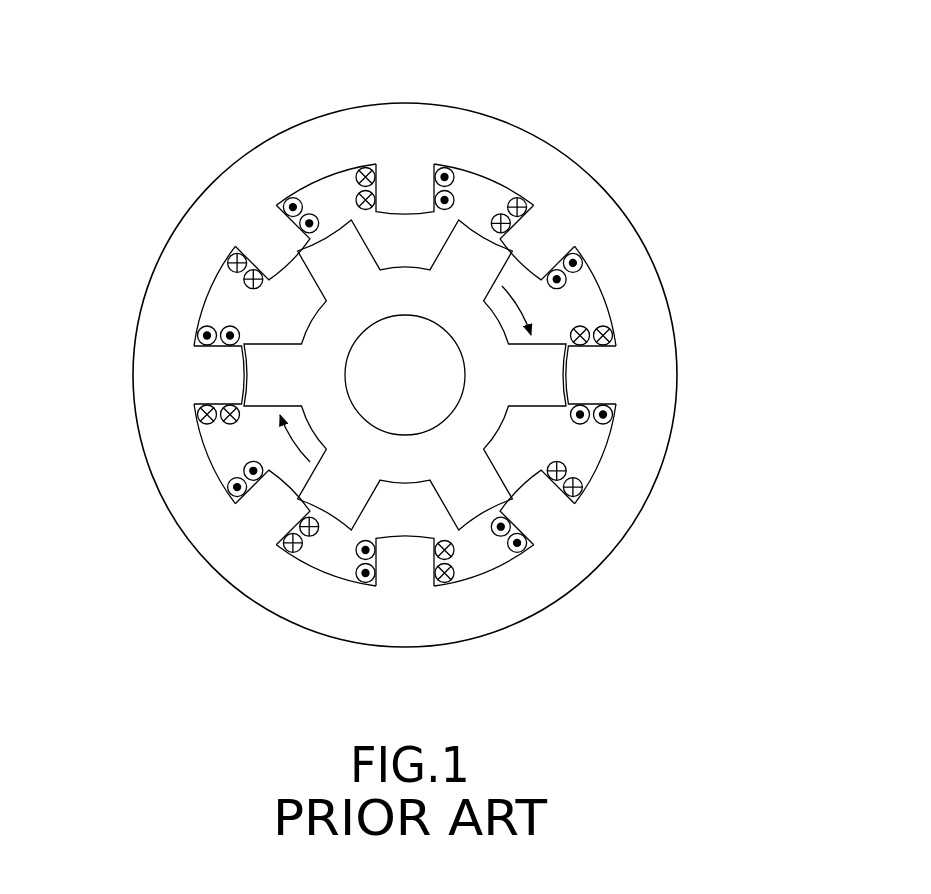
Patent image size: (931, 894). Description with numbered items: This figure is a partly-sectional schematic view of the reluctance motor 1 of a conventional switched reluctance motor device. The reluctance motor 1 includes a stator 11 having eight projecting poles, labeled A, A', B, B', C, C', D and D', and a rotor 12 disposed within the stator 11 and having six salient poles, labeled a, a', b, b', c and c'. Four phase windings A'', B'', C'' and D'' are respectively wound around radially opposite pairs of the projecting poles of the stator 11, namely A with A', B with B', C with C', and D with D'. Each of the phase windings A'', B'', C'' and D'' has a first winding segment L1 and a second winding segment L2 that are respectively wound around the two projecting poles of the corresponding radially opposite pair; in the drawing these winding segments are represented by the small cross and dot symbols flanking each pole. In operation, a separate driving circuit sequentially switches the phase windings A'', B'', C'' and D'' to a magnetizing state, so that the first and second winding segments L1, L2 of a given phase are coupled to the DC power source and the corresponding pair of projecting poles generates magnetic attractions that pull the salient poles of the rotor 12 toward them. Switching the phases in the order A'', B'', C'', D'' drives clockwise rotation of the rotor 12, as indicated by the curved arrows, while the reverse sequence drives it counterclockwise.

The reluctance motor 1 is at (407, 330).
The stator 11 is at (406, 330).
The rotor 12 is at (483, 410).
The first winding segment L1 is at (455, 177).
The second winding segment L2 is at (455, 572).
The phase winding A'' is at (572, 167).
The phase winding B'' is at (145, 426).
The phase winding C'' is at (192, 219).
The phase winding D'' is at (349, 111).